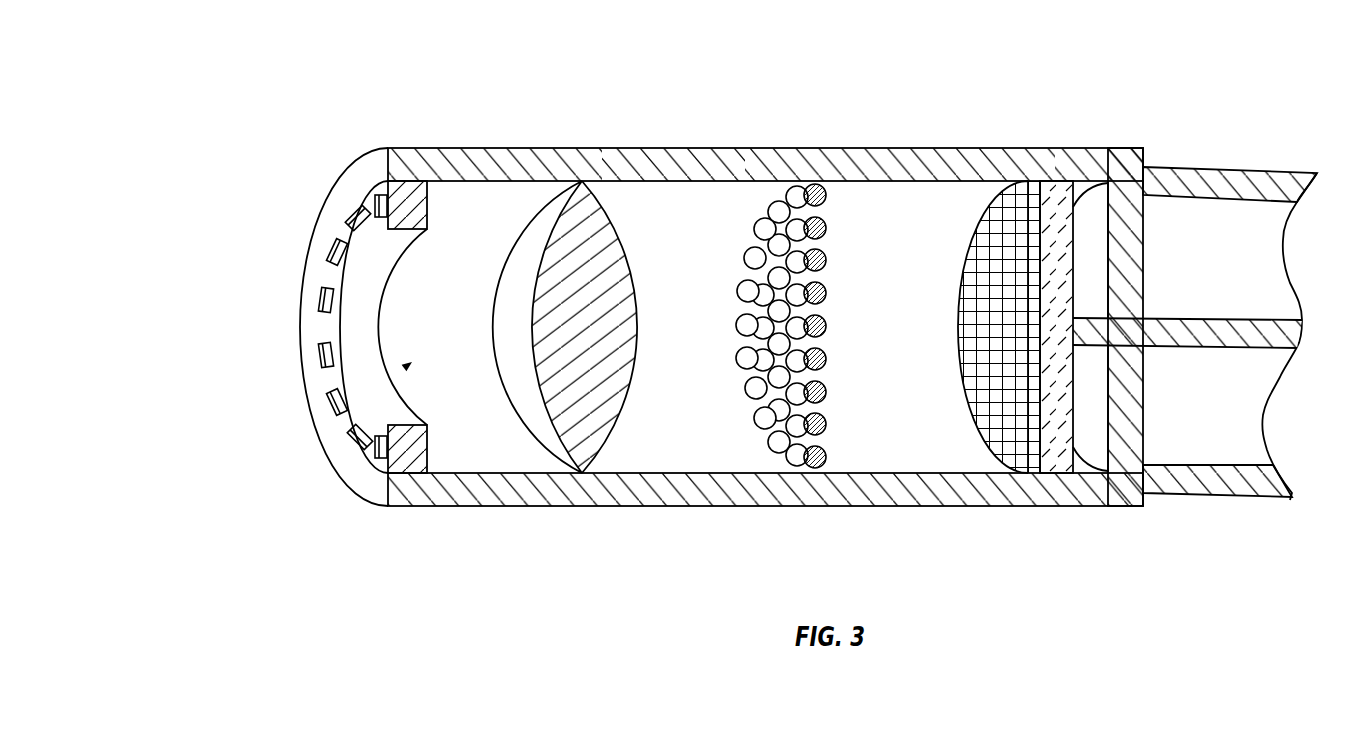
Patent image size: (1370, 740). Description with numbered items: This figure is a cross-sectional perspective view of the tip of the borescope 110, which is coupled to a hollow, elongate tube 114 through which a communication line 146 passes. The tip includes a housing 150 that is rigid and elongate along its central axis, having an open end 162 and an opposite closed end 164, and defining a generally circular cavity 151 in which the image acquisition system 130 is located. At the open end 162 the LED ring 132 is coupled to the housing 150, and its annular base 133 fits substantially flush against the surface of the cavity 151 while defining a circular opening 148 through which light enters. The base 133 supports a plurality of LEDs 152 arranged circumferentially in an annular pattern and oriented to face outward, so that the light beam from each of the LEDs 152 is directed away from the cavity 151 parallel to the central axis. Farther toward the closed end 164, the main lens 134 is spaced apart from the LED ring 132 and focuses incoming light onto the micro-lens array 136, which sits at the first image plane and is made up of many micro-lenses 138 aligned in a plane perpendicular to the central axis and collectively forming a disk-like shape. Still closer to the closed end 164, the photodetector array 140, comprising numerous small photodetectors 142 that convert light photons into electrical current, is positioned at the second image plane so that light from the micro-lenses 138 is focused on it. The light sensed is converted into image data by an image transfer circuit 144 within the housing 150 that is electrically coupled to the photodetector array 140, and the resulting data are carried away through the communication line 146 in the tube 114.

The borescope 110 is at (1231, 123).
The tube 114 is at (1254, 180).
The image acquisition system 130 is at (312, 168).
The LED ring 132 is at (328, 328).
The base 133 is at (373, 195).
The main lens 134 is at (540, 228).
The micro-lens array 136 is at (752, 425).
The micro-lenses 138 is at (767, 282).
The photodetector array 140 is at (1002, 181).
The photodetectors 142 is at (990, 300).
The image transfer circuit 144 is at (1057, 218).
The communication line 146 is at (1240, 322).
The opening 148 is at (392, 410).
The housing 150 is at (448, 148).
The cavity 151 is at (412, 362).
The LEDs 152 is at (336, 247).
The open end 162 is at (306, 365).
The closed end 164 is at (1146, 427).